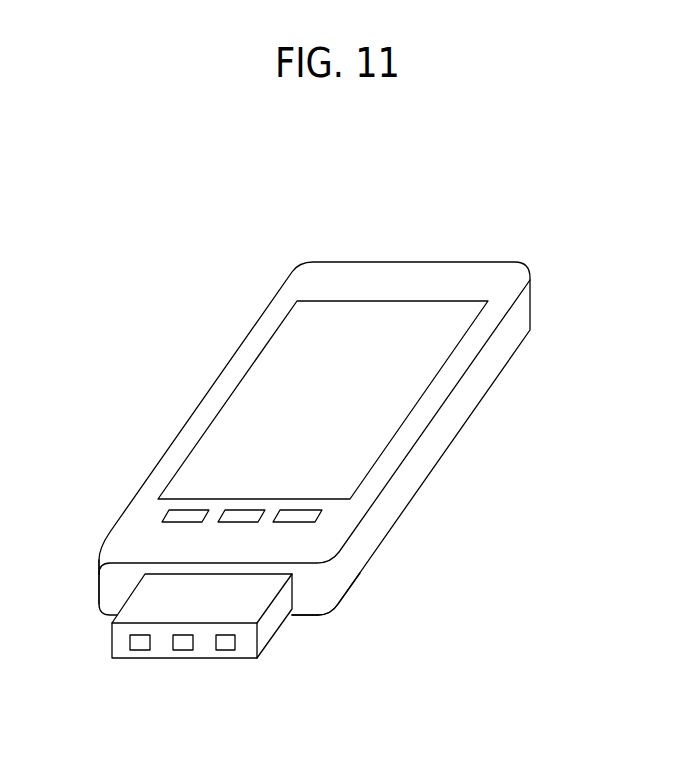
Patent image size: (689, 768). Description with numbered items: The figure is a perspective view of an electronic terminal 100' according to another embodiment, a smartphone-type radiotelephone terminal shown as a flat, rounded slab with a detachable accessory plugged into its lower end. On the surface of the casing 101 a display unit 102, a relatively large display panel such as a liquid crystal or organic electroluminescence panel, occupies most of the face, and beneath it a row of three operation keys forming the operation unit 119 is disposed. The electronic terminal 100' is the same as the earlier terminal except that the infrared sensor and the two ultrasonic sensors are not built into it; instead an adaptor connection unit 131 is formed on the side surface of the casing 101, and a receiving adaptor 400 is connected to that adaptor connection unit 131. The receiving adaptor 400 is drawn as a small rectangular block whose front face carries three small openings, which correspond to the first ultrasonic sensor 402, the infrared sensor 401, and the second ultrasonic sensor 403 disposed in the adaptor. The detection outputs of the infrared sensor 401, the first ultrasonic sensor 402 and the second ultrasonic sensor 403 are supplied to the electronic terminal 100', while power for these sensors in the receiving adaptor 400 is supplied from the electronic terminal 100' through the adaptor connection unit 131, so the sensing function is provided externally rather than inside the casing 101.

The electronic terminal 100' is at (314, 438).
The casing 101 is at (337, 532).
The display unit 102 is at (422, 361).
The operation unit 119 is at (224, 521).
The adaptor connection unit 131 is at (318, 593).
The receiving adaptor 400 is at (138, 613).
The infrared sensor 401 is at (186, 651).
The first ultrasonic sensor 402 is at (143, 651).
The second ultrasonic sensor 403 is at (228, 651).